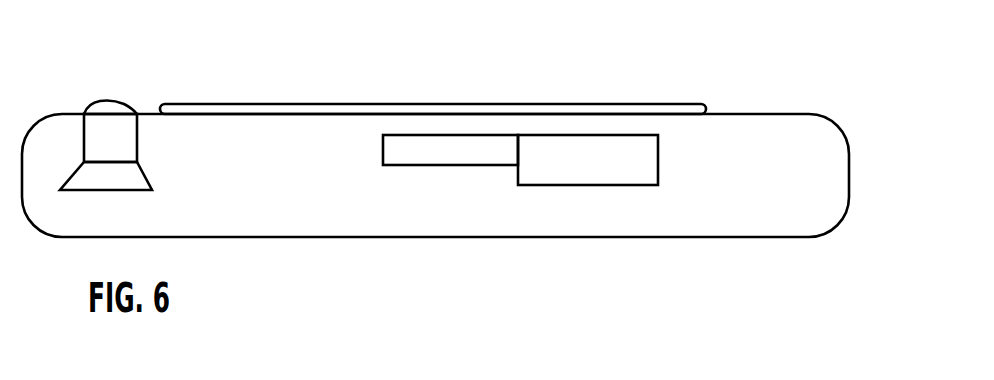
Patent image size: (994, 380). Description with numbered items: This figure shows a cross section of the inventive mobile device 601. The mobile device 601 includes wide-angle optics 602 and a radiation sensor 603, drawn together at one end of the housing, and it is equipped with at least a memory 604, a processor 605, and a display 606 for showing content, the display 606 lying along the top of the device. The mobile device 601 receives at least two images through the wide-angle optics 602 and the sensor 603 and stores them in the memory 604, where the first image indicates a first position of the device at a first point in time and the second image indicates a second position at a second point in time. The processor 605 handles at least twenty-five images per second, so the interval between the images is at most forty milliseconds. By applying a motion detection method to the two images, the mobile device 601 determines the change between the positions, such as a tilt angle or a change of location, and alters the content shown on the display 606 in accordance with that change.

The mobile device 601 is at (777, 114).
The wide-angle optics 602 is at (125, 132).
The radiation sensor 603 is at (123, 180).
The memory 604 is at (645, 148).
The processor 605 is at (400, 147).
The display 606 is at (676, 104).